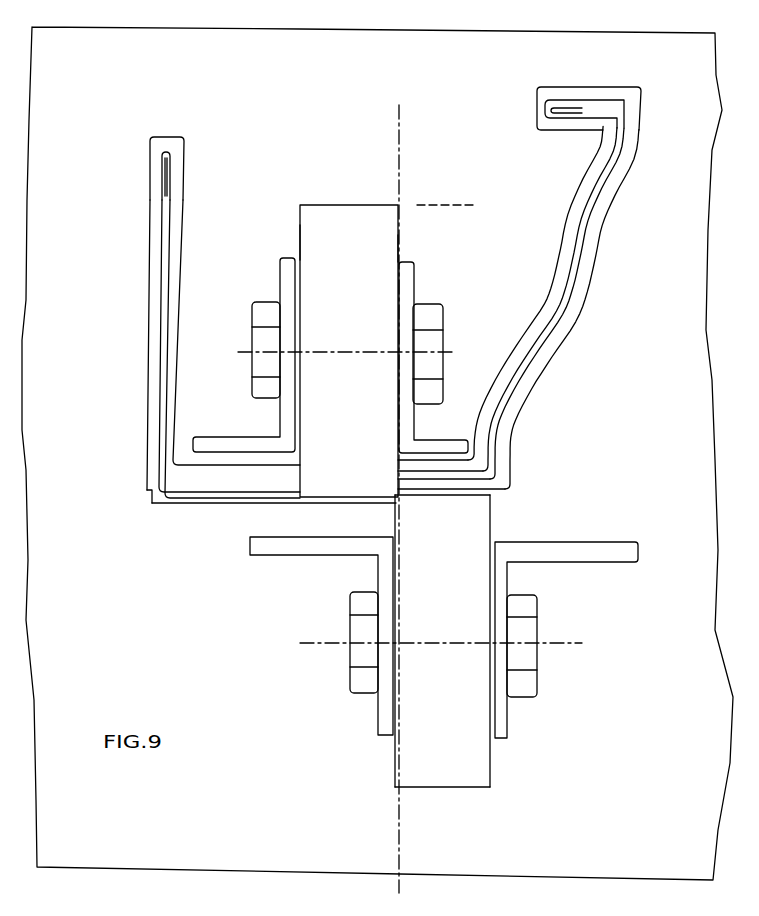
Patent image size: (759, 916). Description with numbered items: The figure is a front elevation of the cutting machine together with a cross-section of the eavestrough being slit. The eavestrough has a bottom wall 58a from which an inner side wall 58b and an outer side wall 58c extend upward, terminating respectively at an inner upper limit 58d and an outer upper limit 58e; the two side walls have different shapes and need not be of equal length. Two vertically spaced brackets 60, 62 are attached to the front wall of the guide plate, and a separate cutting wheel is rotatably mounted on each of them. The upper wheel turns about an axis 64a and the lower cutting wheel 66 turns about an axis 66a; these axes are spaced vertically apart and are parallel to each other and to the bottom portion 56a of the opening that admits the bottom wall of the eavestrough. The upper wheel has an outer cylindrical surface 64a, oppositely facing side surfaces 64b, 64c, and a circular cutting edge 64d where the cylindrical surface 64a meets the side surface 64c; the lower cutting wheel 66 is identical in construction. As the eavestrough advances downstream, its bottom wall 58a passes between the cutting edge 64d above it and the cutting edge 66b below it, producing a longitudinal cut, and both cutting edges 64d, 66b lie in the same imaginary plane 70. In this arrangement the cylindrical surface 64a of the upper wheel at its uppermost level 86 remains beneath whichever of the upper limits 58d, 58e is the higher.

The bottom portion of the opening 56a is at (159, 503).
The bottom wall 58a is at (250, 495).
The inner side wall 58b is at (162, 285).
The outer side wall 58c is at (542, 352).
The inner upper limit 58d is at (160, 137).
The outer upper limit 58e is at (602, 102).
The bracket 60 is at (245, 436).
The bracket 62 is at (480, 426).
The outer cylindrical surface 64a is at (322, 204).
The side surface 64b is at (300, 240).
The side surface 64c is at (399, 248).
The circular cutting edge 64d is at (404, 500).
The cutting wheel 66 is at (490, 766).
The axis 66a is at (442, 644).
The cutting edge 66b is at (395, 787).
The imaginary plane 70 is at (397, 497).
The uppermost level 86 is at (470, 203).